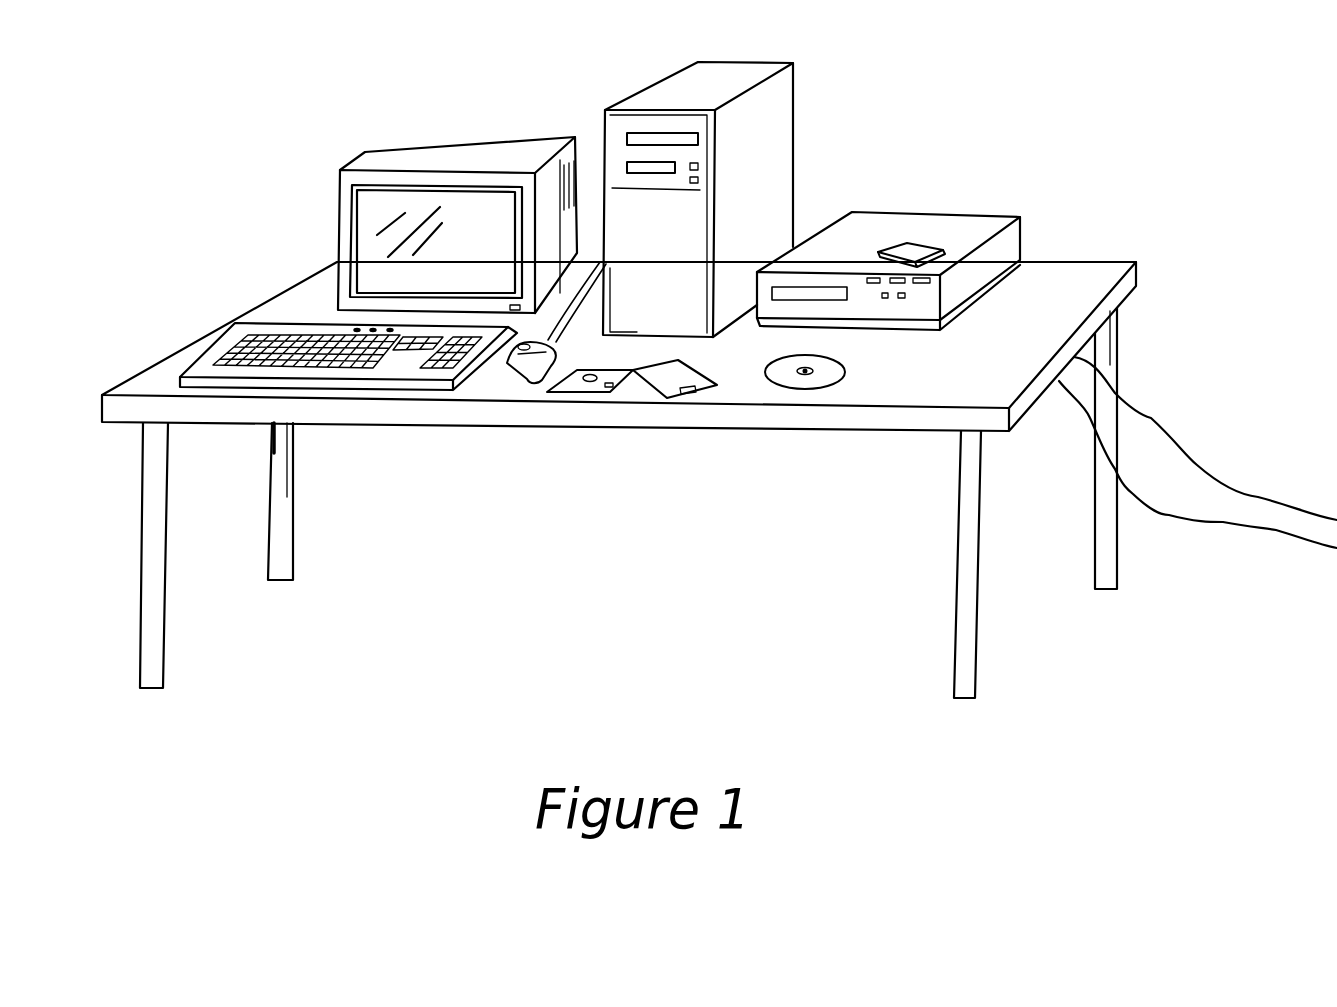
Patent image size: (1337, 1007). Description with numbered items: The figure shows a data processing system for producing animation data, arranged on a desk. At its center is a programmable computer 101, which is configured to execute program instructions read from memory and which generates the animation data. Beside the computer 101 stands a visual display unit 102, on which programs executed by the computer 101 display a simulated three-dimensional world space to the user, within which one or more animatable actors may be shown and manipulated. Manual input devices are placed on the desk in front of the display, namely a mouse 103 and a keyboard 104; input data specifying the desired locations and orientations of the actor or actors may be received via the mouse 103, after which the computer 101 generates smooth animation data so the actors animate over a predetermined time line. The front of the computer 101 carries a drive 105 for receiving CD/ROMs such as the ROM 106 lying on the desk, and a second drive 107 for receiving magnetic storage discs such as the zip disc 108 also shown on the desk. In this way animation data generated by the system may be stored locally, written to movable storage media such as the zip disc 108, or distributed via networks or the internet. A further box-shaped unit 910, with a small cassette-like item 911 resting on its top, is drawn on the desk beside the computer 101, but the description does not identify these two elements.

The computer 101 is at (773, 130).
The visual display unit 102 is at (433, 147).
The mouse 103 is at (525, 370).
The keyboard 104 is at (225, 343).
The drive 105 is at (647, 140).
The ROM 106 is at (825, 373).
The drive 107 is at (627, 167).
The zip disc 108 is at (575, 388).
The external recording device 910 is at (983, 227).
The recording medium cassette 911 is at (922, 245).